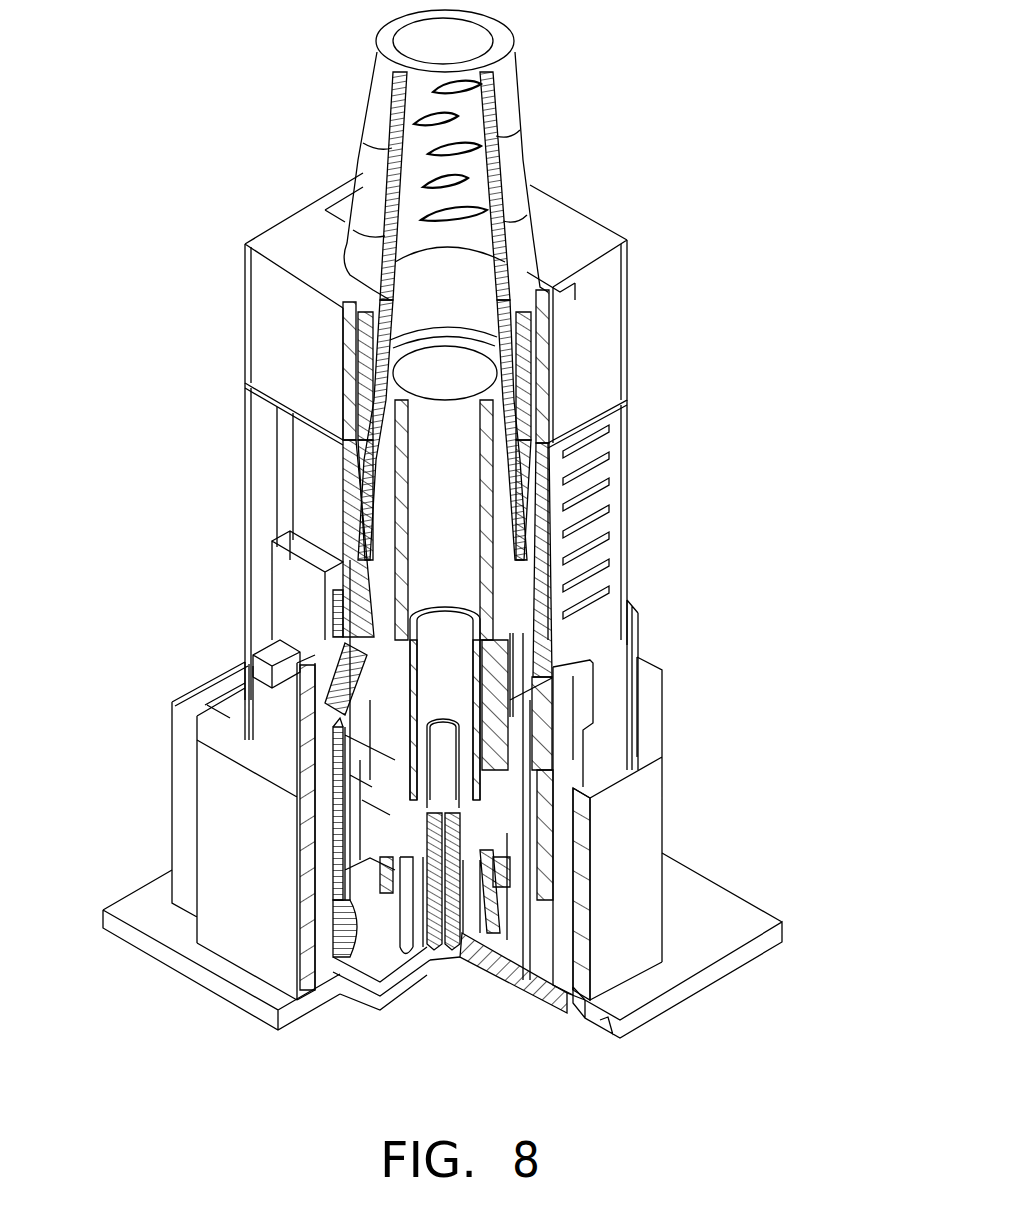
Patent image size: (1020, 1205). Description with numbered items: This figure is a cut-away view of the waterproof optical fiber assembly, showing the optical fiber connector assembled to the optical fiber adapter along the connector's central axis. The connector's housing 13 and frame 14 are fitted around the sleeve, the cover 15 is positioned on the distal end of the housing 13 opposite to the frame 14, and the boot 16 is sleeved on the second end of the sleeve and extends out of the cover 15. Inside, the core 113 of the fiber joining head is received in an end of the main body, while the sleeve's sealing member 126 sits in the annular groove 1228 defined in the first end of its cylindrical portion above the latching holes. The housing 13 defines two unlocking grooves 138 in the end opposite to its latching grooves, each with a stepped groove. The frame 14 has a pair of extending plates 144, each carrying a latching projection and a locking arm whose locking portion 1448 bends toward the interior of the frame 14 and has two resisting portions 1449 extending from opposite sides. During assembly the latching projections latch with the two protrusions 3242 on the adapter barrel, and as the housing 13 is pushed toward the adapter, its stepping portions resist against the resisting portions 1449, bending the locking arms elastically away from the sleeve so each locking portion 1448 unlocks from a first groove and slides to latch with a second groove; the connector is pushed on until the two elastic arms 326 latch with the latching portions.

The boot 16 is at (387, 108).
The cover 15 is at (597, 347).
The housing 13 is at (610, 500).
The frame 14 is at (295, 587).
The resisting portion 1449 is at (345, 665).
The locking portion 1448 is at (335, 702).
The unlocking groove 138 is at (590, 658).
The elastic arm 326 is at (585, 702).
The protrusion 3242 is at (335, 888).
The sealing member 126 is at (507, 870).
The core 113 is at (443, 947).
The annular groove 1228 is at (508, 937).
The extending plate 144 is at (343, 922).